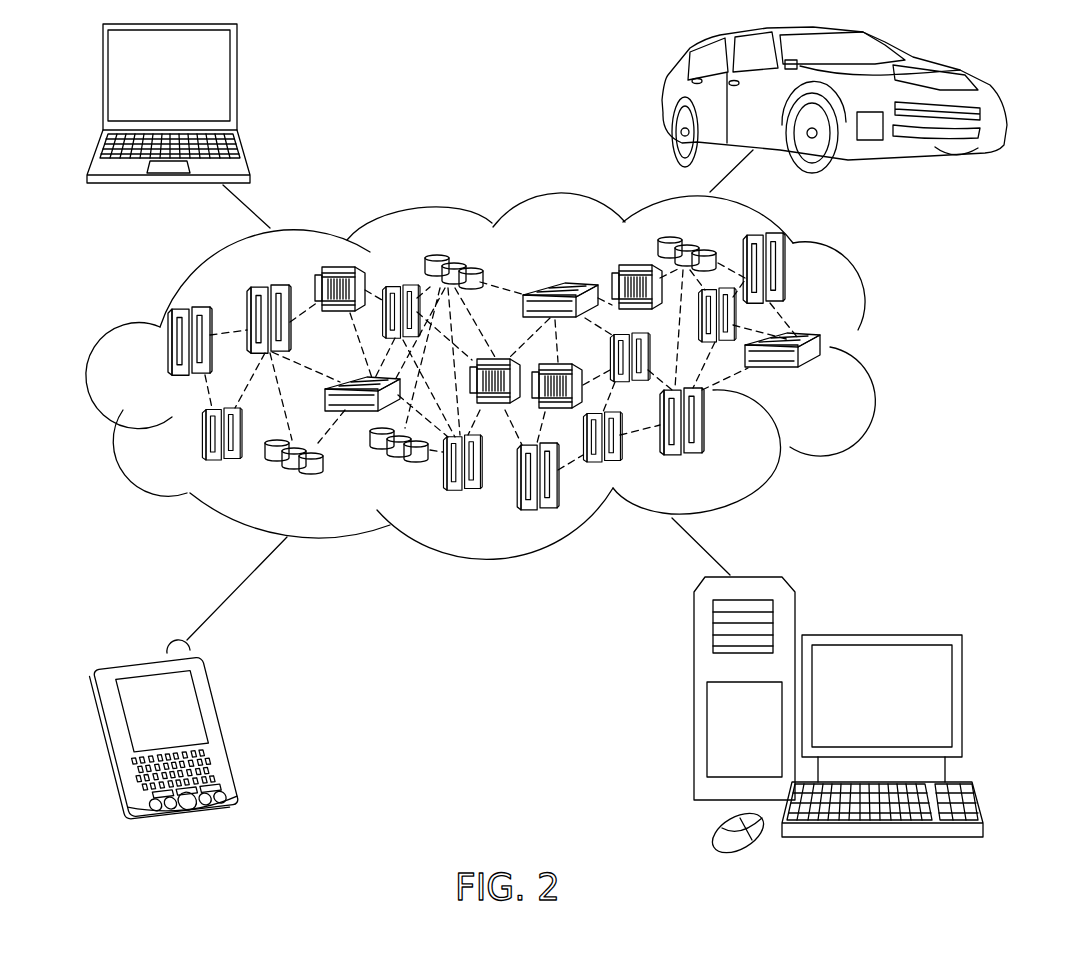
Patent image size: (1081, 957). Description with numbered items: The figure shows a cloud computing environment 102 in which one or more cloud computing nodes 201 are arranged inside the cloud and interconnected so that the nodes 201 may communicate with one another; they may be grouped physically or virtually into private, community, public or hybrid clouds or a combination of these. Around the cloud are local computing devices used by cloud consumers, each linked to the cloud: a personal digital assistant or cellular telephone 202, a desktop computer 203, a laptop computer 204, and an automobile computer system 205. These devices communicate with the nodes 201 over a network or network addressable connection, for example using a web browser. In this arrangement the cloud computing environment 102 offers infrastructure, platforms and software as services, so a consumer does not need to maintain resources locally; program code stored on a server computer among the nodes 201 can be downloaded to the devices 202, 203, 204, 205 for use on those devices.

The cloud computing environment 102 is at (880, 350).
The cloud computing nodes 201 is at (823, 380).
The personal digital assistant (PDA) or cellular telephone 202 is at (227, 724).
The desktop computer 203 is at (880, 635).
The laptop computer 204 is at (237, 84).
The automobile computer system 205 is at (662, 92).